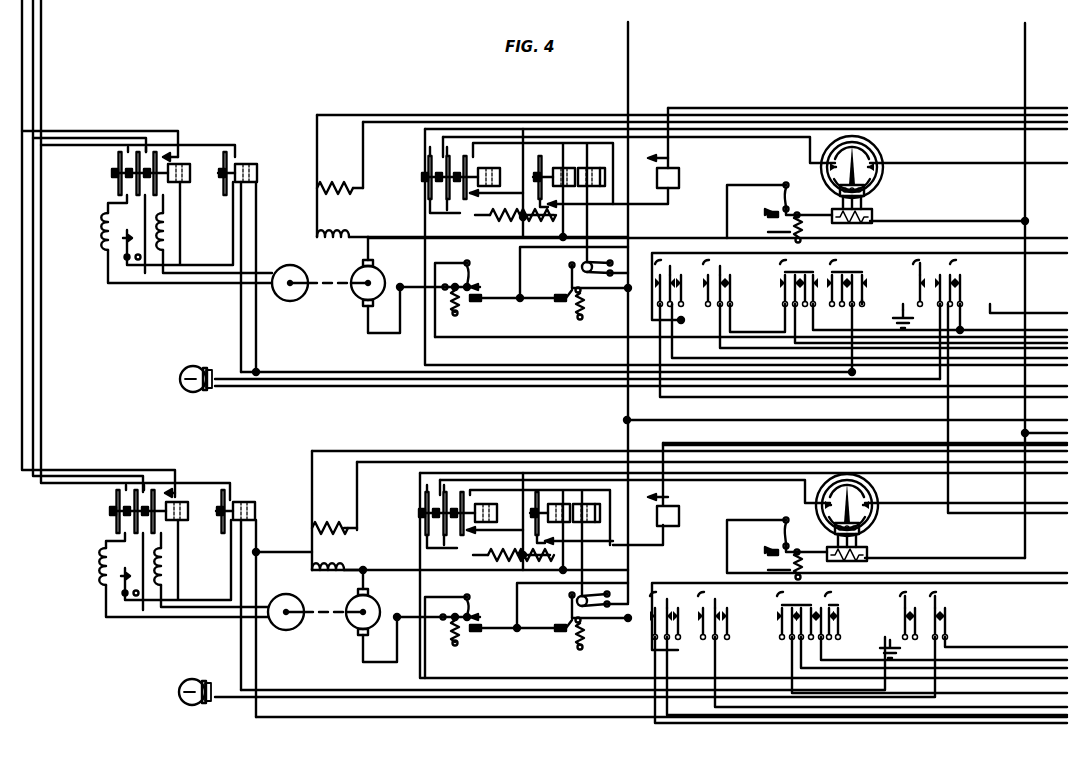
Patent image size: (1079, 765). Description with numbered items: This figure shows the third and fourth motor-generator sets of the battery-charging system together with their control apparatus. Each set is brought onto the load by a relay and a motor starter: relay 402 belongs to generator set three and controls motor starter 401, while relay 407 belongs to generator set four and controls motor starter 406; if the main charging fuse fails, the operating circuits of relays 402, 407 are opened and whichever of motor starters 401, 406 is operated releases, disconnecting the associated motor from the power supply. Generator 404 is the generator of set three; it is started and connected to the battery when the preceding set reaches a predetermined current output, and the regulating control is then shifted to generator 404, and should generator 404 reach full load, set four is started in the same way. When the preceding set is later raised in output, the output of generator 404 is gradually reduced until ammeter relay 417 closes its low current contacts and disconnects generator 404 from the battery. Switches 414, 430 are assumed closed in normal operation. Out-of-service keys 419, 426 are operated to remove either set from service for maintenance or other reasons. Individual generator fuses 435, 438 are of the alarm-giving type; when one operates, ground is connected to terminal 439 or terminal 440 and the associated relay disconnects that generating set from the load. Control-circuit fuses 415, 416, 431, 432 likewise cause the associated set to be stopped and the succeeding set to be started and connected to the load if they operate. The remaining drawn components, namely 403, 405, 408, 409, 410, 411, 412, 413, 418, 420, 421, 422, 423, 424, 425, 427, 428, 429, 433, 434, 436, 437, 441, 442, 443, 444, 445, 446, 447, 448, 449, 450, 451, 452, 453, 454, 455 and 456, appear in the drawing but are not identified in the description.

The motor starter 401 is at (181, 182).
The relay 402 is at (233, 165).
The generator No. 3 403 is at (290, 266).
The generator 404 is at (352, 278).
The lamp 405 is at (180, 379).
The motor starter 406 is at (179, 520).
The relay 407 is at (258, 513).
The generator No. 4 408 is at (286, 594).
The exciter generator 409 is at (375, 606).
The lamp 410 is at (179, 692).
The relay 411 is at (488, 190).
The relay 412 is at (592, 170).
The relay coil 413 is at (680, 180).
The switch 414 is at (590, 260).
The fuse 415 is at (470, 272).
The fuse 416 is at (570, 273).
The ammeter relay 417 is at (860, 162).
The meter 418 is at (855, 500).
The out-of-service key 419 is at (932, 267).
The contact set 420 is at (802, 275).
The contact set 421 is at (726, 262).
The contact set 422 is at (668, 262).
The contact set 423 is at (663, 594).
The contact set 424 is at (722, 594).
The contact set 425 is at (800, 600).
The out-of-service key 426 is at (918, 595).
The relay 427 is at (485, 527).
The relay 428 is at (585, 503).
The relay coil 429 is at (680, 517).
The switch 430 is at (571, 608).
The fuse 431 is at (578, 599).
The fuse 432 is at (470, 608).
The inductor 433 is at (332, 231).
The resistor 434 is at (335, 183).
The generator fuse 435 is at (782, 200).
The inductor 436 is at (330, 583).
The resistor 437 is at (327, 525).
The generator fuse 438 is at (782, 530).
The terminal 439 is at (766, 216).
The terminal 440 is at (766, 553).
The contact 441 is at (478, 301).
The contact 442 is at (560, 301).
The contact 443 is at (478, 631).
The contact 444 is at (562, 631).
The resistor 445 is at (768, 236).
The resistor 446 is at (768, 572).
The resistor 447 is at (458, 298).
The resistor 448 is at (585, 305).
The resistor 449 is at (587, 640).
The resistor 450 is at (455, 630).
The contact 451 is at (796, 200).
The contact 452 is at (786, 547).
The contact 453 is at (478, 285).
The resistor 454 is at (584, 298).
The contact 455 is at (478, 617).
The resistor 456 is at (588, 632).